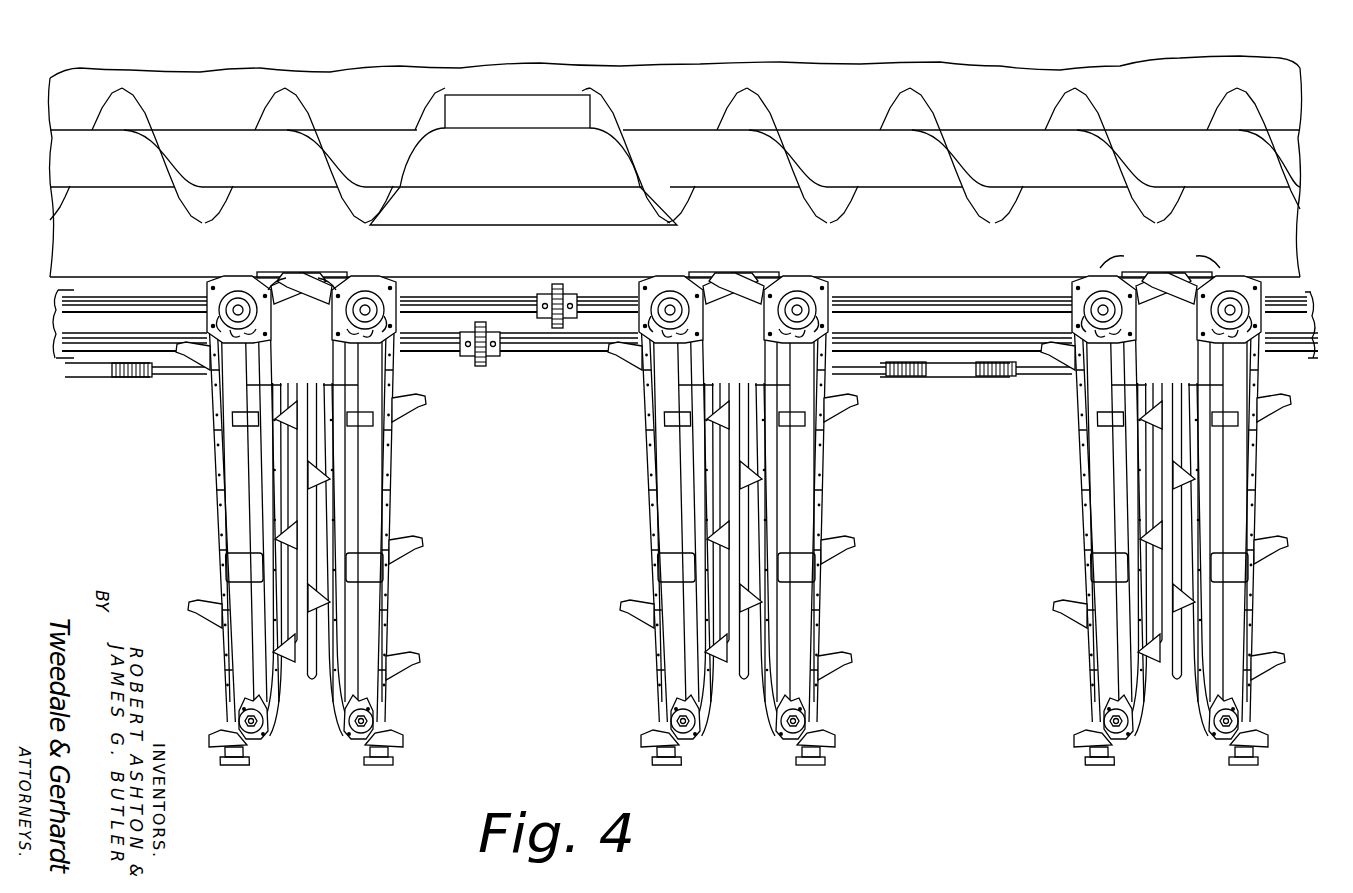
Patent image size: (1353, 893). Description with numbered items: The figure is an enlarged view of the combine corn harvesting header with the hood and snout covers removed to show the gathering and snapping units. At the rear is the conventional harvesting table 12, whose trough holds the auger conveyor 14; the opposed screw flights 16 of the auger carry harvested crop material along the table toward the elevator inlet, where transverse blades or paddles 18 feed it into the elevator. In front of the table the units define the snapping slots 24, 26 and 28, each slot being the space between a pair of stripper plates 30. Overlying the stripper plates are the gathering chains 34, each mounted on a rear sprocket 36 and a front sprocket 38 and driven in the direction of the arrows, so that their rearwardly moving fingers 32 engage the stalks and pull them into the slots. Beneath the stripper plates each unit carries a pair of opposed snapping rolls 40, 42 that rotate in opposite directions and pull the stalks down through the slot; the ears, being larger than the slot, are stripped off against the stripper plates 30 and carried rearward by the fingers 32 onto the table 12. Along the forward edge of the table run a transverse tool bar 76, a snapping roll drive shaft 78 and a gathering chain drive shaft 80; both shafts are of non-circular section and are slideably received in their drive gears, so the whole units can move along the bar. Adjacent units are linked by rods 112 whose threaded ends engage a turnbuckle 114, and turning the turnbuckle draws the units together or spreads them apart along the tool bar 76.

The harvesting table 12 is at (1200, 80).
The auger conveyor 14 is at (840, 142).
The screw flights 16 is at (1072, 112).
The transverse blades or paddles 18 is at (532, 210).
The snapping slot 24 is at (305, 690).
The snapping slot 26 is at (738, 688).
The snapping slot 28 is at (1170, 686).
The stripper plates 30 is at (314, 384).
The fingers 32 is at (406, 428).
The gathering chains 34 is at (212, 440).
The rear sprocket 36 is at (244, 290).
The front sprocket 38 is at (235, 721).
The snapping roll 40 is at (300, 611).
The snapping roll 42 is at (315, 609).
The tool bar 76 is at (60, 306).
The snapping roll drive shaft 78 is at (547, 352).
The gathering chain drive shaft 80 is at (522, 300).
The rod 112 is at (176, 378).
The turnbuckle 114 is at (110, 378).